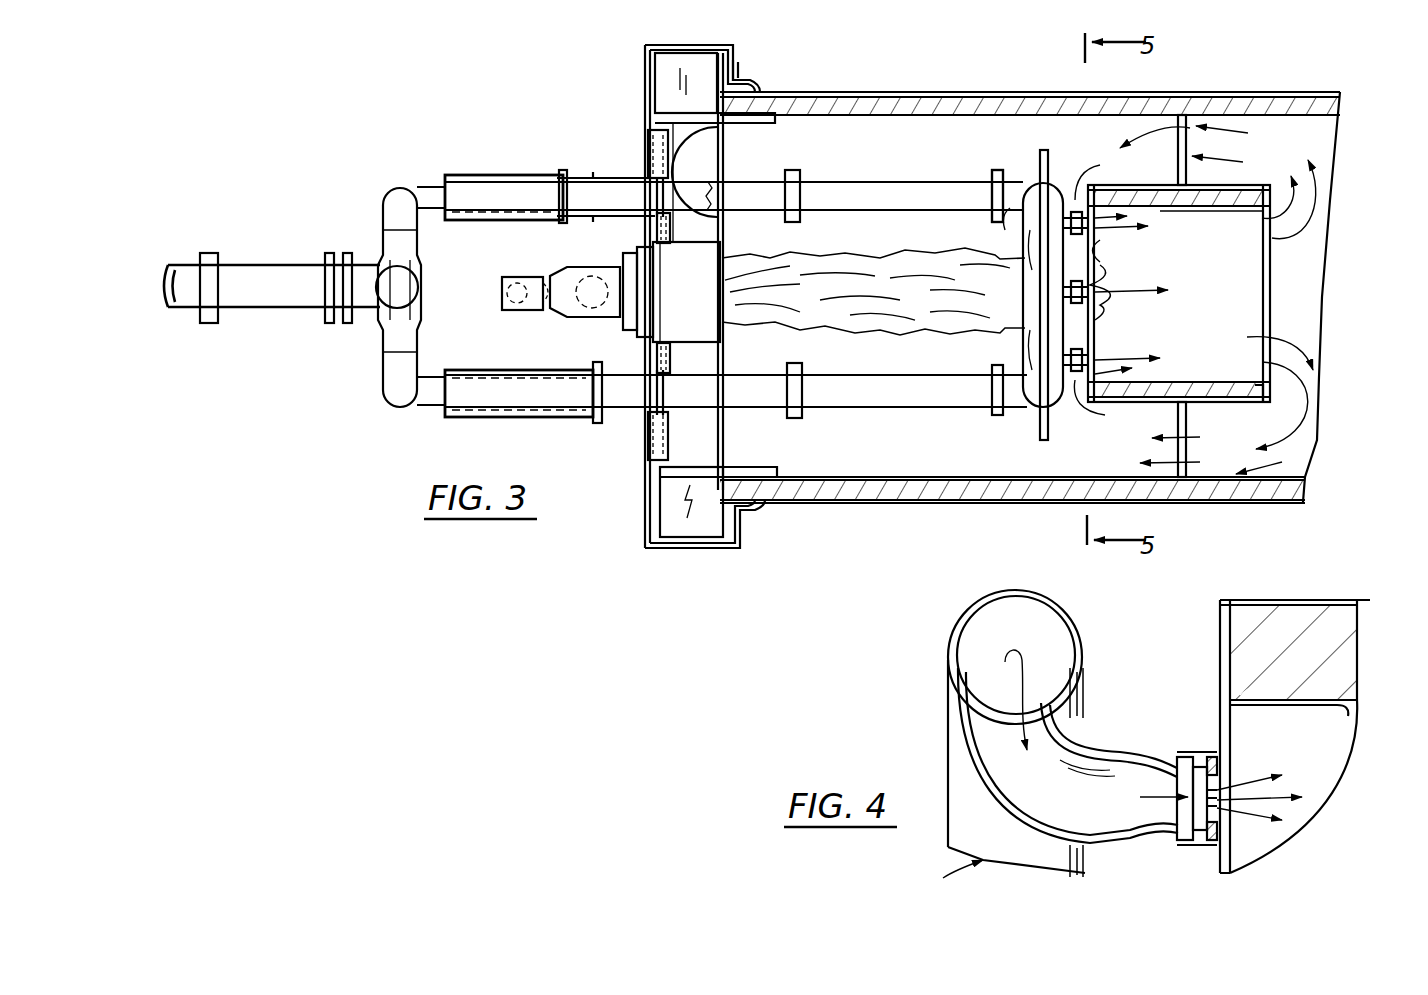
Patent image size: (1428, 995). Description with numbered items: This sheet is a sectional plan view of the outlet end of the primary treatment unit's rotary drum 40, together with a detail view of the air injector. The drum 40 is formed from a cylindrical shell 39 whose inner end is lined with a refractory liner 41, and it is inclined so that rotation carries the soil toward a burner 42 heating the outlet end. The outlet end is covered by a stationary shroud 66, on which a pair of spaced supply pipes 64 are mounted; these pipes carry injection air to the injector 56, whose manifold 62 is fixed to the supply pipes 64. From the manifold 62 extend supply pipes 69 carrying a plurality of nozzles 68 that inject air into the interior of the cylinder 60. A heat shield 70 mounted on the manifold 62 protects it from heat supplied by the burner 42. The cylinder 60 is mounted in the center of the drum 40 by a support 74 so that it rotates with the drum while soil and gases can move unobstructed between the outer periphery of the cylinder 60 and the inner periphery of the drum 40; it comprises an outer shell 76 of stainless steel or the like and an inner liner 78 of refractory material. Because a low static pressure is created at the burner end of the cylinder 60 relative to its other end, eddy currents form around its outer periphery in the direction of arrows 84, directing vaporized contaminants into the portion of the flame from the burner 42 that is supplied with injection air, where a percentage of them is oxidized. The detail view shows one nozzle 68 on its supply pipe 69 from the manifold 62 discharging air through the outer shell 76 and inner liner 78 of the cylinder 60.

In FIG. 3, the cylindrical shell 39 is at (878, 82).
In FIG. 3, the rotary drum 40 is at (872, 504).
In FIG. 3, the refractory liner 41 is at (906, 114).
In FIG. 3, the burner 42 is at (600, 266).
In FIG. 3, the injector 56 is at (998, 152).
In FIG. 3, the cylinder 60 is at (1260, 182).
In FIG. 4, the cylinder 60 is at (1350, 588).
In FIG. 3, the manifold 62 is at (1025, 400).
In FIG. 4, the manifold 62 is at (1080, 646).
In FIG. 3, the supply pipes 64 is at (832, 181).
In FIG. 3, the stationary shroud 66 is at (738, 55).
In FIG. 3, the nozzles 68 is at (1087, 215).
In FIG. 4, the nozzles 68 is at (1212, 755).
In FIG. 4, the supply pipes 69 is at (1110, 752).
In FIG. 3, the heat shield 70 is at (1047, 440).
In FIG. 3, the support 74 is at (1190, 460).
In FIG. 3, the outer shell 76 is at (1244, 403).
In FIG. 4, the outer shell 76 is at (1298, 569).
In FIG. 3, the inner liner 78 is at (1196, 383).
In FIG. 4, the inner liner 78 is at (1345, 713).
In FIG. 3, the arrows 84 is at (1226, 128).